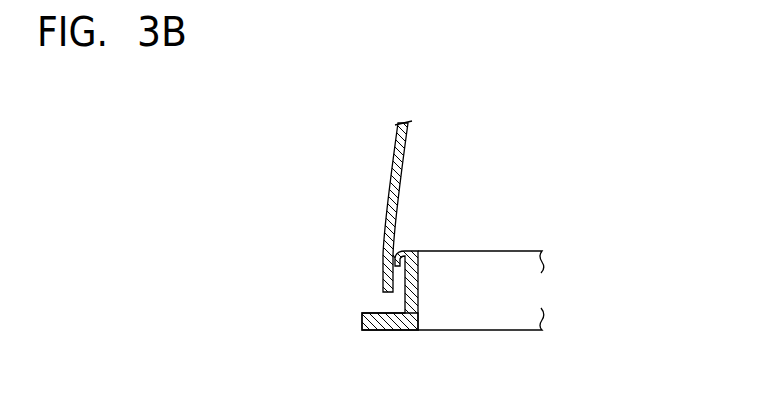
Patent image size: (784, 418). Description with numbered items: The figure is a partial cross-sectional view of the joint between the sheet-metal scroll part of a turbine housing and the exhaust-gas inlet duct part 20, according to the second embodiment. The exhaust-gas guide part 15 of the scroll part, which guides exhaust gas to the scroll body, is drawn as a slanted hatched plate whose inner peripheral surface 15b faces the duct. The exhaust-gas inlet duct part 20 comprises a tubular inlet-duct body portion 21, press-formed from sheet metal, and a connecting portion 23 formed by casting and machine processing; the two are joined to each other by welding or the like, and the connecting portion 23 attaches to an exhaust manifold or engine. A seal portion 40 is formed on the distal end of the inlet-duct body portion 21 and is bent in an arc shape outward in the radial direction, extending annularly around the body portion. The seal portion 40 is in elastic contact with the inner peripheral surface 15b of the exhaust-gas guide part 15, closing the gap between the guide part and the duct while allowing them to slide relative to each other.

The exhaust-gas guide part 15 is at (391, 180).
The inner peripheral surface 15b is at (404, 162).
The exhaust-gas inlet duct part 20 is at (574, 270).
The inlet-duct body portion 21 is at (419, 281).
The connecting portion 23 is at (383, 332).
The seal portion 40 is at (406, 242).